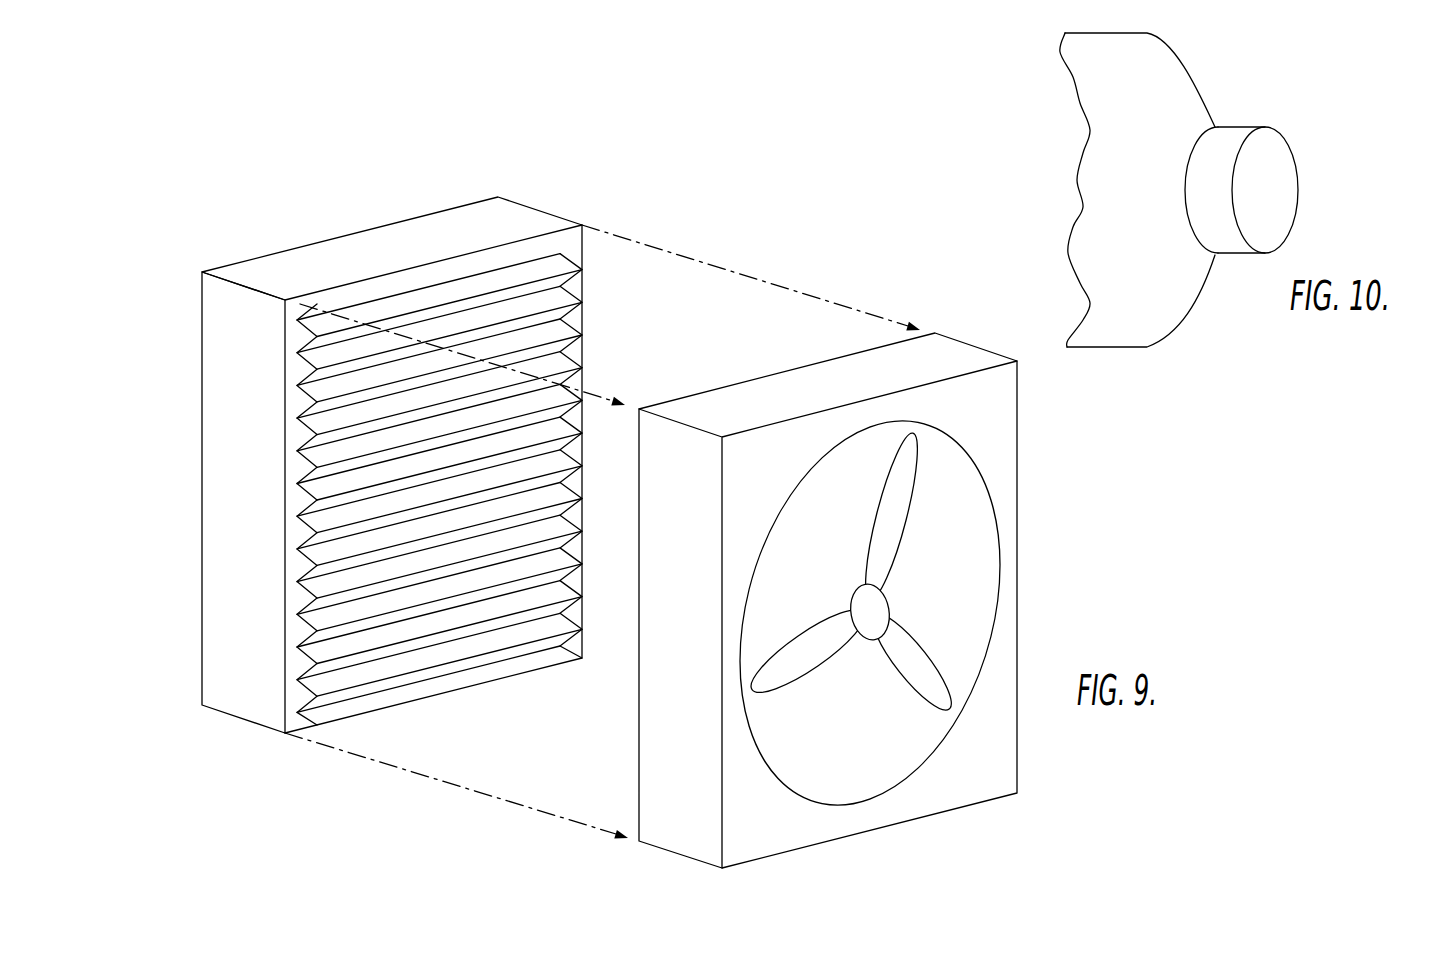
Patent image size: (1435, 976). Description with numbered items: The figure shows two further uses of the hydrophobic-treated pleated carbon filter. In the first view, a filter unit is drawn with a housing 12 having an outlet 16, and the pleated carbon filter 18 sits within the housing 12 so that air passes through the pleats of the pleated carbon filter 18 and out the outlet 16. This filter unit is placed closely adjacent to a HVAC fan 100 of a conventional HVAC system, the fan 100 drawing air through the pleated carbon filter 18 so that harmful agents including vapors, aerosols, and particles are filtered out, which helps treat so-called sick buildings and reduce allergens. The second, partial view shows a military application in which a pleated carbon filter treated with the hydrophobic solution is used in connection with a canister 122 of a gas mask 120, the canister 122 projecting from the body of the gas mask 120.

In FIG. 9, the housing 12 is at (238, 522).
In FIG. 9, the outlet 16 is at (407, 230).
In FIG. 9, the pleated carbon filter 18 is at (555, 356).
In FIG. 9, the HVAC fan 100 is at (670, 815).
In FIG. 10, the gas mask 120 is at (1202, 328).
In FIG. 10, the canister 122 is at (1298, 181).